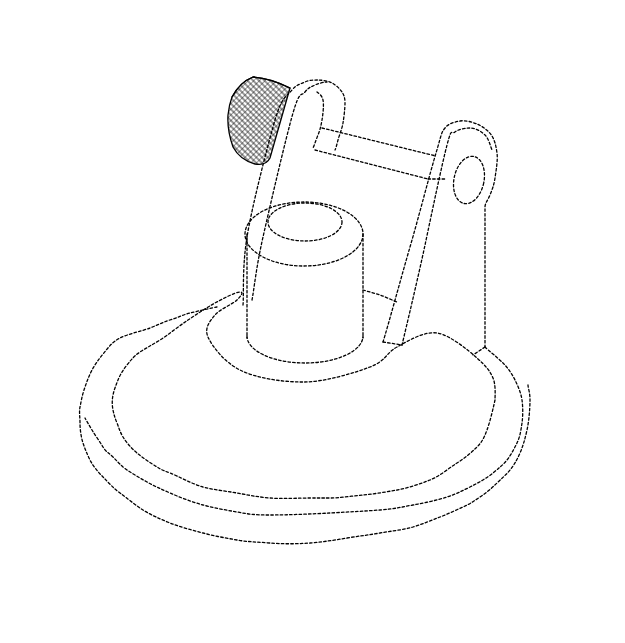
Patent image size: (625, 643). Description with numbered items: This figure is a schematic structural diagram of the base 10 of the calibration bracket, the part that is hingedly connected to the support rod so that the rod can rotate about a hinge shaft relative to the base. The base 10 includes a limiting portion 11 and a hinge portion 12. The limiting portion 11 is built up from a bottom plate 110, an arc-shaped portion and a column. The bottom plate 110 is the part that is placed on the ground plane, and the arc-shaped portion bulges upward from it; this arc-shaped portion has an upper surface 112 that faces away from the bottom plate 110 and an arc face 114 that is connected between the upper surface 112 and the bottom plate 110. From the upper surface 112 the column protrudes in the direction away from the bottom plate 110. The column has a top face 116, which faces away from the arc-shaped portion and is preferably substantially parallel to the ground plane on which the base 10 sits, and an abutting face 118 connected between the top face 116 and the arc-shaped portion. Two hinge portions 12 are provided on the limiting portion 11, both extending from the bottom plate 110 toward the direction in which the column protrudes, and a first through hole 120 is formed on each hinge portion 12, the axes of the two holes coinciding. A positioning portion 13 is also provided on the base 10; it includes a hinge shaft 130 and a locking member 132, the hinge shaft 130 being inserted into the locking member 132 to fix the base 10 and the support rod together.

The base 10 is at (121, 92).
The limiting portion 11 is at (82, 147).
The bottom plate 110 is at (117, 373).
The upper surface 112 is at (230, 340).
The arc face 114 is at (175, 370).
The top face 116 is at (300, 230).
The abutting face 118 is at (273, 287).
The hinge portion 12 is at (320, 107).
The first through hole 120 is at (323, 124).
The positioning portion 13 is at (162, 80).
The hinge shaft 130 is at (268, 122).
The locking member 132 is at (257, 95).